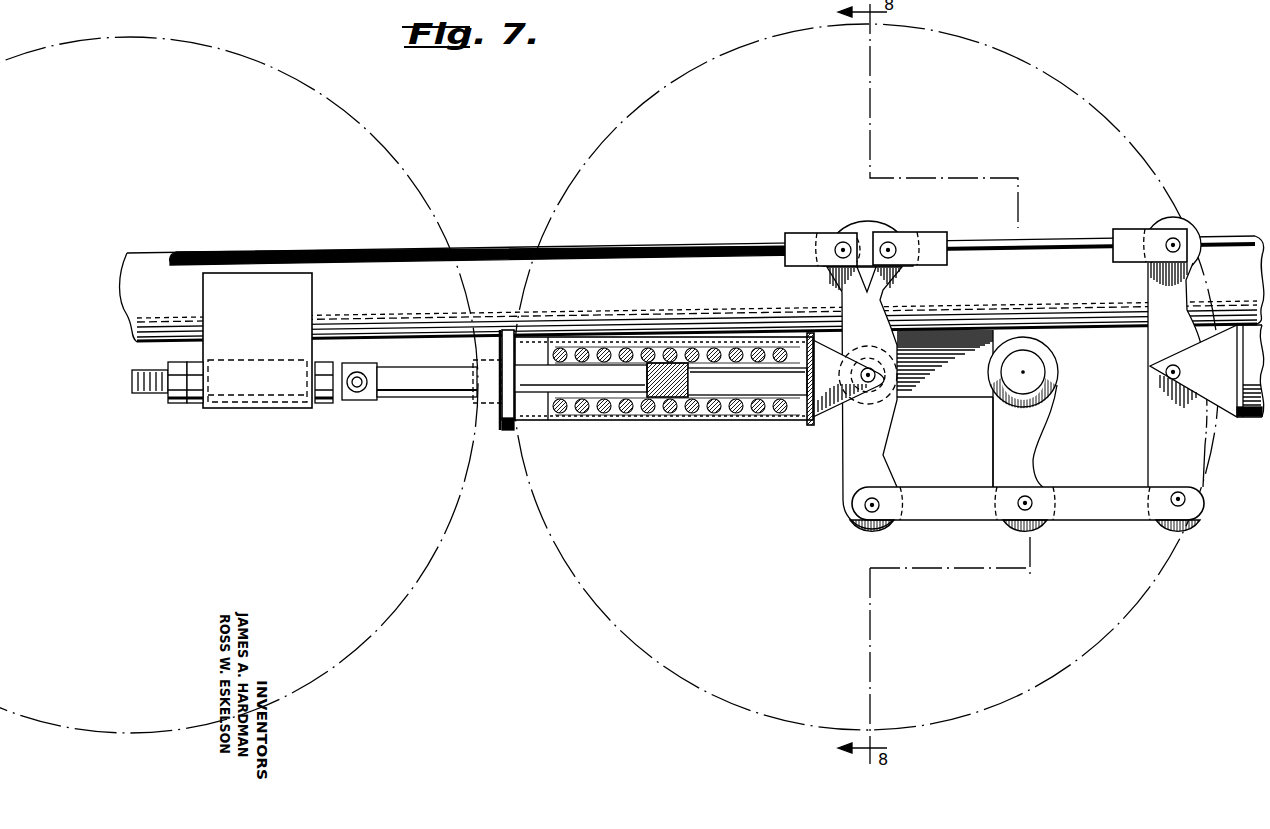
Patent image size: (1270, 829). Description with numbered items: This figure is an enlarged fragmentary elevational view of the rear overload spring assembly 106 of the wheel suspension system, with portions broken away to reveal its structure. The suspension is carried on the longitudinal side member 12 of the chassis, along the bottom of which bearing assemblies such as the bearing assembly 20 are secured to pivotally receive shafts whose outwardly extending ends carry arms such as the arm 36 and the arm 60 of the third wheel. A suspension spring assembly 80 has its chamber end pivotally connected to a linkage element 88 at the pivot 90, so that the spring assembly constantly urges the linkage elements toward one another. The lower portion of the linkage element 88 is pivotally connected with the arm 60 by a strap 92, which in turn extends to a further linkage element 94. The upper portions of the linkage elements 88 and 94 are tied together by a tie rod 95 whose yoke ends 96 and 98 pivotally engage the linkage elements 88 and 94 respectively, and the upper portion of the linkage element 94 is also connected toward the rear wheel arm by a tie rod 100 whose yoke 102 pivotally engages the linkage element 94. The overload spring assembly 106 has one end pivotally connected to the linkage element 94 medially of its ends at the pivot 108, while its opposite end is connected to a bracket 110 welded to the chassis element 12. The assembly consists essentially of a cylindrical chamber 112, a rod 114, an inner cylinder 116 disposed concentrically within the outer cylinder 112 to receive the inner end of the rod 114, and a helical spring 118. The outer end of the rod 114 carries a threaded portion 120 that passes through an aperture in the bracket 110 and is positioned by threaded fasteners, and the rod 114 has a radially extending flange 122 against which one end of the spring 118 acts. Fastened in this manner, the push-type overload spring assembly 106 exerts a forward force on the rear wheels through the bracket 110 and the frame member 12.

The longitudinal side member 12 is at (1236, 246).
The bearing assembly 20 is at (1058, 349).
The arm 36 is at (954, 402).
The arm of the third wheel 60 is at (1030, 444).
The suspension spring assembly 80 is at (1253, 416).
The linkage element 88 is at (1160, 437).
The pivotal connection 90 is at (1157, 367).
The strap 92 is at (1095, 512).
The linkage element 94 is at (850, 515).
The tie rod 95 is at (973, 248).
The yoke end 96 is at (1127, 230).
The yoke end 98 is at (927, 233).
The tie rod 100 is at (617, 250).
The yoke 102 is at (802, 234).
The overload spring assembly 106 is at (577, 422).
The pivotal connection 108 is at (866, 368).
The bracket 110 is at (276, 355).
The cylindrical chamber 112 is at (686, 420).
The rod 114 is at (426, 400).
The inner cylinder 116 is at (763, 390).
The helical spring 118 is at (636, 410).
The threaded portion 120 is at (165, 403).
The flange 122 is at (553, 420).